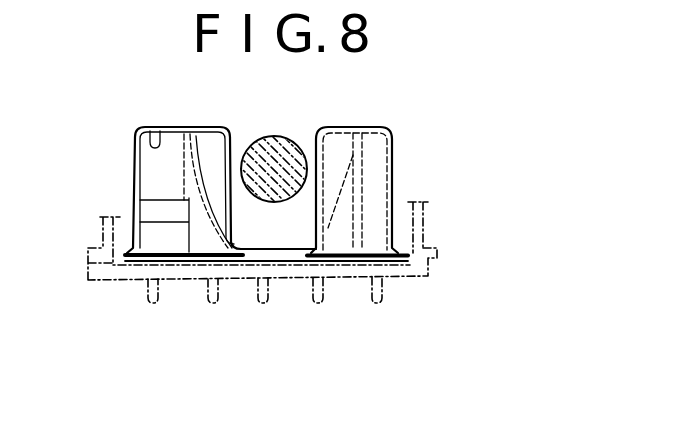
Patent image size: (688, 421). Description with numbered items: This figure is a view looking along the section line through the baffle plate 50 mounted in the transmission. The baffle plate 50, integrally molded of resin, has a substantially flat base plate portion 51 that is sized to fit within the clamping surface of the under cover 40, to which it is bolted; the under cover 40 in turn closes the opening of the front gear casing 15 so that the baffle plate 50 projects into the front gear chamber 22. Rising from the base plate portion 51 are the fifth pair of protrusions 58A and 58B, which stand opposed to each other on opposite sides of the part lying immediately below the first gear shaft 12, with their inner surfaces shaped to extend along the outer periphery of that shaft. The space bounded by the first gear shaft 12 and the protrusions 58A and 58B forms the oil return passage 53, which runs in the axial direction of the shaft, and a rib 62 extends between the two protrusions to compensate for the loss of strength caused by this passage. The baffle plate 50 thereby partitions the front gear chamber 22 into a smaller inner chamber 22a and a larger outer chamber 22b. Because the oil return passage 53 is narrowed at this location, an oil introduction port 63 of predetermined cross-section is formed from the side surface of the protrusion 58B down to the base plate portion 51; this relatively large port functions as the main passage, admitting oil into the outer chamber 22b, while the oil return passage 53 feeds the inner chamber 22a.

The first gear shaft 12 is at (281, 129).
The front gear casing 15 is at (418, 224).
The front gear chamber 22 is at (192, 345).
The inner chamber 22a is at (244, 216).
The outer chamber 22b is at (222, 266).
The under cover 40 is at (414, 278).
The baffle plate 50 is at (376, 128).
The base plate portion 51 is at (286, 262).
The oil return passage 53 is at (296, 232).
The fifth protrusion 58A is at (393, 158).
The fifth protrusion 58B is at (221, 128).
The rib 62 is at (252, 266).
The oil introduction port 63 is at (152, 128).